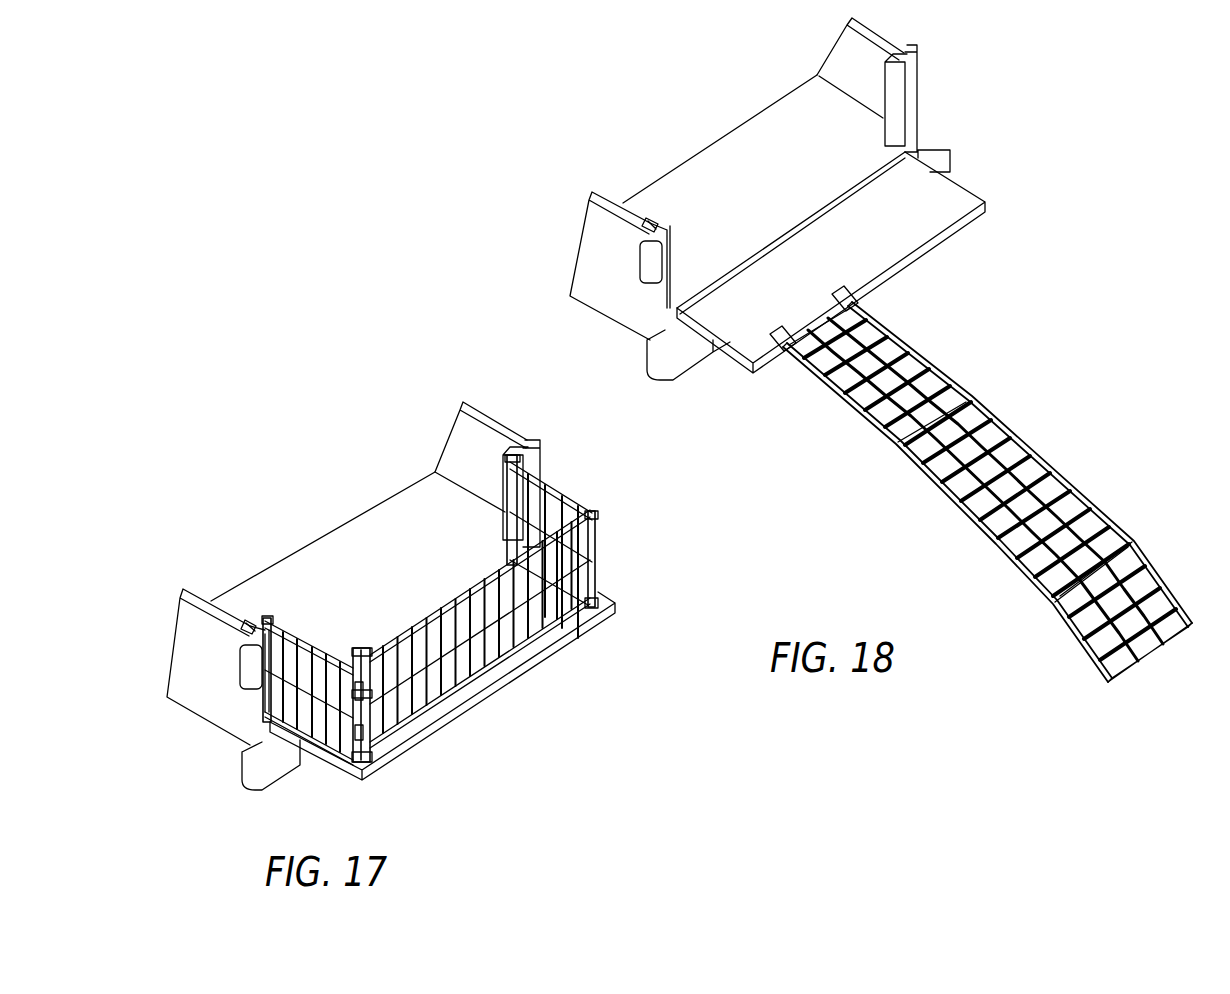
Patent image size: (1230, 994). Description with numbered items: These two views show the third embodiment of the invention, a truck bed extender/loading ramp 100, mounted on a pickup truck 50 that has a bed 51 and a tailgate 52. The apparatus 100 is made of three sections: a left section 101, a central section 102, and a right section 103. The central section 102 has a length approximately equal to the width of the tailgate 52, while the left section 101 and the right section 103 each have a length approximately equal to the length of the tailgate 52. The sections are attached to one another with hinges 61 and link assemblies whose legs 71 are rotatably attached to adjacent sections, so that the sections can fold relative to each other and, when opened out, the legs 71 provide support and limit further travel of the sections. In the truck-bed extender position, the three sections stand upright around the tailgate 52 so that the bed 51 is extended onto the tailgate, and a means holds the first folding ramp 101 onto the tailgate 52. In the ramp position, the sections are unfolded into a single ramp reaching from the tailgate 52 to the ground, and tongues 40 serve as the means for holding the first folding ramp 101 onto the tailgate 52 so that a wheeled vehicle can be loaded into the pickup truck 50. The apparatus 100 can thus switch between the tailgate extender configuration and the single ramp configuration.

In FIG. 18, the tongue 40 is at (773, 335).
In FIG. 17, the pickup truck 50 is at (186, 716).
In FIG. 18, the pickup truck 50 is at (595, 315).
In FIG. 17, the bed 51 is at (352, 542).
In FIG. 18, the bed 51 is at (706, 183).
In FIG. 17, the tailgate 52 is at (608, 603).
In FIG. 18, the tailgate 52 is at (945, 237).
In FIG. 17, the hinge 61 is at (372, 732).
In FIG. 17, the leg 71 is at (357, 650).
In FIG. 17, the truck bed extender/loading ramp 100 is at (466, 627).
In FIG. 18, the truck bed extender/loading ramp 100 is at (982, 492).
In FIG. 17, the left section 101 is at (297, 630).
In FIG. 18, the left section 101 is at (812, 383).
In FIG. 17, the central section 102 is at (458, 708).
In FIG. 18, the central section 102 is at (948, 495).
In FIG. 17, the right section 103 is at (557, 487).
In FIG. 18, the right section 103 is at (1077, 628).